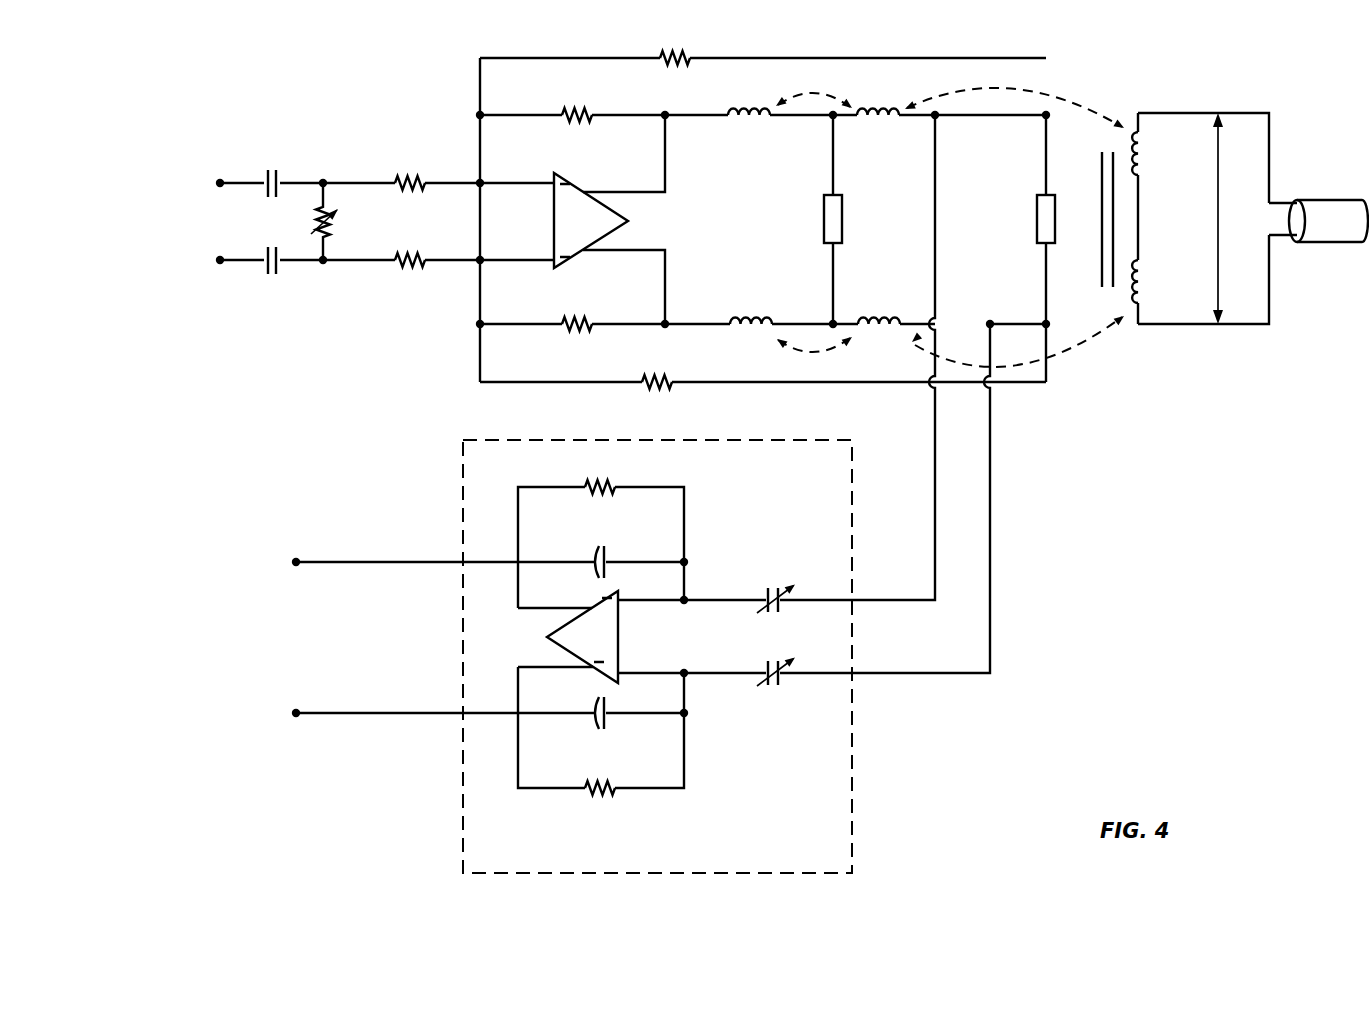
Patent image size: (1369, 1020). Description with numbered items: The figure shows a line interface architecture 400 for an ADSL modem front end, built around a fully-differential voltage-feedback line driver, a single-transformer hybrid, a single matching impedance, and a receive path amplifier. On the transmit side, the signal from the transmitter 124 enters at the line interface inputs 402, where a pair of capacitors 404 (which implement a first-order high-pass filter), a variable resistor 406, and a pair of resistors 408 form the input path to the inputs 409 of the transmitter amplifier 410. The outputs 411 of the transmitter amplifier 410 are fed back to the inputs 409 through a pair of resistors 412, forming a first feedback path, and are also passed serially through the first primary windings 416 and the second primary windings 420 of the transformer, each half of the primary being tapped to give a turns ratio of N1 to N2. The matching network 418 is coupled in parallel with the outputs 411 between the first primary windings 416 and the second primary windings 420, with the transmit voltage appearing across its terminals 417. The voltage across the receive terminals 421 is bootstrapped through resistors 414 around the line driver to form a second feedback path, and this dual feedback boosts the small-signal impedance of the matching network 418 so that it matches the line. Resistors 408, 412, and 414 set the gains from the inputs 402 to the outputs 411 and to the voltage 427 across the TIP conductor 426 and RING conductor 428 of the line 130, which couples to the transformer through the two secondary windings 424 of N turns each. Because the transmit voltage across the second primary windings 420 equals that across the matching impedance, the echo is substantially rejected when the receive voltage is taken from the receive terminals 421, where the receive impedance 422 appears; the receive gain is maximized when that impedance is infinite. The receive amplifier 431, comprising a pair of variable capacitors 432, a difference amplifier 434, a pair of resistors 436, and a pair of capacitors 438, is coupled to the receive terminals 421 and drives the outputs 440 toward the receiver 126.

The transmitter 124 is at (106, 237).
The receiver 126 is at (178, 640).
The line 130 is at (1329, 235).
The line interface architecture 400 is at (1122, 708).
The line interface inputs 402 is at (220, 178).
The capacitors 404 is at (278, 142).
The variable resistor 406 is at (312, 231).
The resistors 408 is at (427, 176).
The inputs 409 is at (538, 185).
The transmitter amplifier 410 is at (591, 220).
The outputs 411 is at (666, 155).
The resistors 412 is at (577, 123).
The resistors 414 is at (680, 70).
The first primary windings 416 is at (749, 222).
The terminals 417 is at (794, 164).
The matching network 418 is at (843, 210).
The second primary windings 420 is at (873, 125).
The receive terminals 421 is at (1004, 150).
The receive impedance 422 is at (1033, 208).
The secondary windings 424 is at (1147, 167).
The TIP conductor 426 is at (1203, 125).
The voltage 427 is at (1228, 202).
The RING conductor 428 is at (1203, 310).
The receive amplifier 431 is at (830, 868).
The variable capacitors 432 is at (783, 575).
The difference amplifier 434 is at (569, 639).
The resistors 436 is at (598, 497).
The capacitors 438 is at (604, 547).
The outputs 440 is at (296, 557).